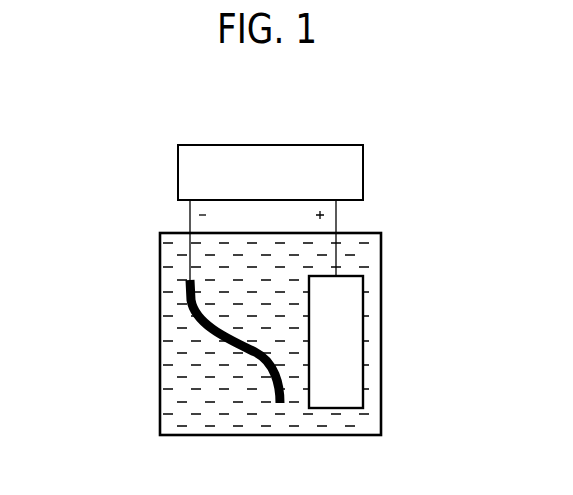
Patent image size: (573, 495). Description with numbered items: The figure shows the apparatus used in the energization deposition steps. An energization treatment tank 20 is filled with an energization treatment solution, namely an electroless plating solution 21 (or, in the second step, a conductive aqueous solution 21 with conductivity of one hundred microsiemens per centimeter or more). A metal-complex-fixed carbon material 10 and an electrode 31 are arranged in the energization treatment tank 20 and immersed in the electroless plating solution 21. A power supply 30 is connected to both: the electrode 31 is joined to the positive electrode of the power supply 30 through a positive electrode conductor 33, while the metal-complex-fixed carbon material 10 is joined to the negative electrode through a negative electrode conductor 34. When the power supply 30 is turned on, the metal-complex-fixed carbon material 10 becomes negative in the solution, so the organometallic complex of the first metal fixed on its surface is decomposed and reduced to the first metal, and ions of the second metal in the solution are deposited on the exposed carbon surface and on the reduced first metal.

The metal-complex-fixed carbon material 10 is at (195, 323).
The energization treatment tank 20 is at (382, 363).
The electroless plating solution 21 is at (172, 388).
The power supply 30 is at (272, 145).
The electrode 31 is at (362, 315).
The positive electrode conductor 33 is at (338, 209).
The negative electrode conductor 34 is at (188, 217).